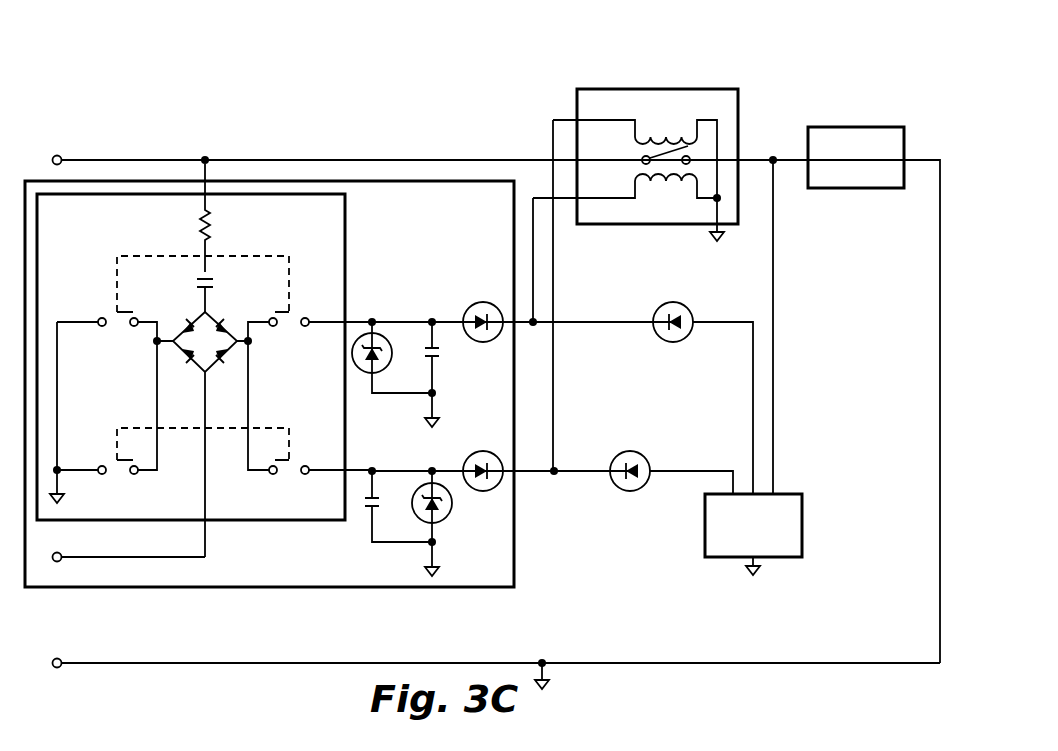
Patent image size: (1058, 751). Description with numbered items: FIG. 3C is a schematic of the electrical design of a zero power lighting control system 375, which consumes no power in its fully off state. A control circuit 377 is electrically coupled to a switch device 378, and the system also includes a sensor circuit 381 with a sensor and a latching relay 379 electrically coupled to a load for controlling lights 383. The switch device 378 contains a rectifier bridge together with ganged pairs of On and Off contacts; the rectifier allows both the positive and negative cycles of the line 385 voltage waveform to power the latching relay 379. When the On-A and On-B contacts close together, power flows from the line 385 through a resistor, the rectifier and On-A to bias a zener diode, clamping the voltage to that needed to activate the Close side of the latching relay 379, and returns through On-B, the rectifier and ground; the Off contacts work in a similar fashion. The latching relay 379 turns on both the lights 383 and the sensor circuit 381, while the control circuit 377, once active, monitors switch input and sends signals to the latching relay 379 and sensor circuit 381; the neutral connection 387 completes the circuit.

The zero power lighting control system 375 is at (128, 47).
The control circuit 377 is at (514, 500).
The switch device 378 is at (257, 232).
The latching relay 379 is at (655, 88).
The sensor circuit 381 is at (802, 525).
The lights 383 is at (853, 126).
The line 385 is at (55, 156).
The neutral terminal 387 is at (55, 659).